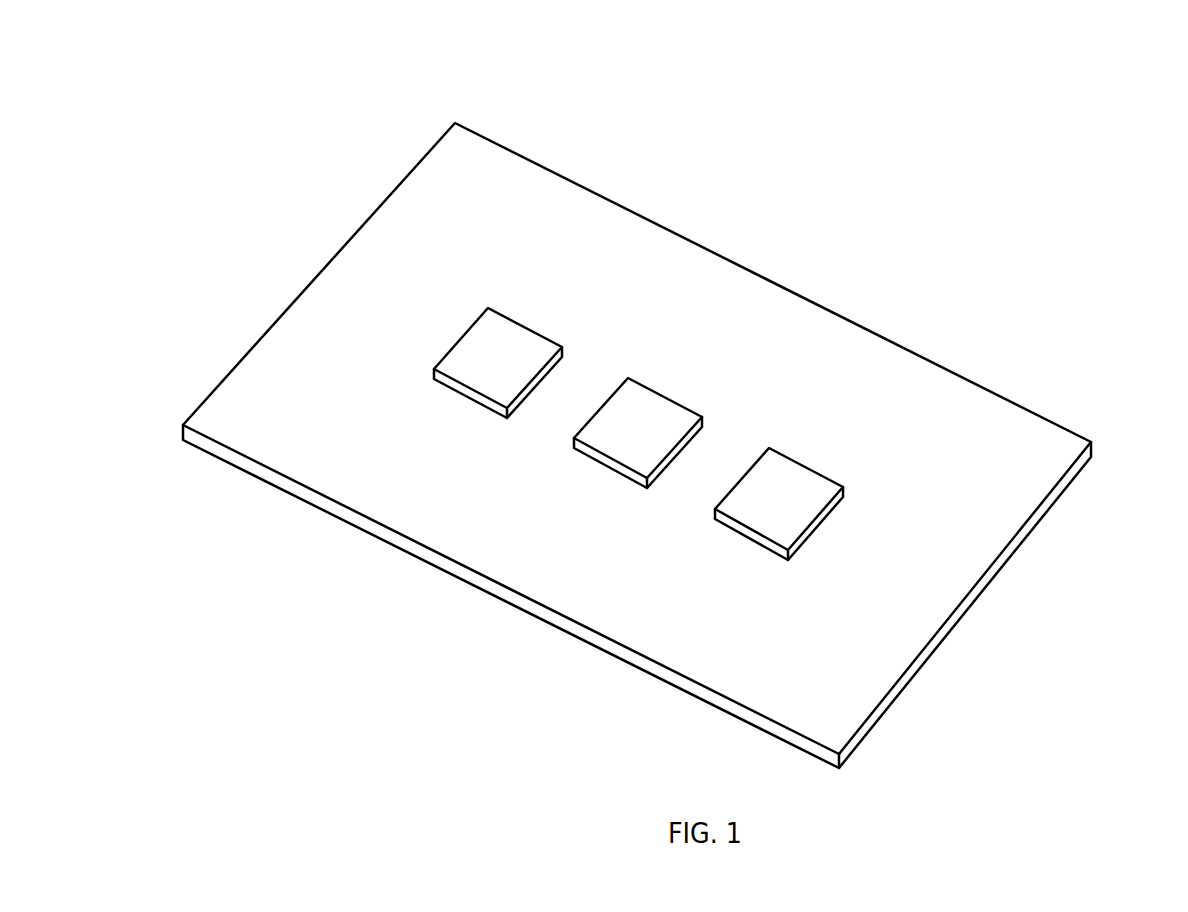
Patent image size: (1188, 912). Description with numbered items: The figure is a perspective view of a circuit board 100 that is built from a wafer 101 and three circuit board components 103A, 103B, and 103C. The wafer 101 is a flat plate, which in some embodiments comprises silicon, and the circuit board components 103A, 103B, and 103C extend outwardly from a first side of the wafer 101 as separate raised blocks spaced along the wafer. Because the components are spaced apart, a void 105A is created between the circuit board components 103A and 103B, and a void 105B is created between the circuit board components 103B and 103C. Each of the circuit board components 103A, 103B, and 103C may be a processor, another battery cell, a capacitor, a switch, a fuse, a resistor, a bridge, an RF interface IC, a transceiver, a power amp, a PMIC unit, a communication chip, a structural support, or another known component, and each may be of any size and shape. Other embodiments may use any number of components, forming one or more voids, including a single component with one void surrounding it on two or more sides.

The circuit board 100 is at (1062, 120).
The wafer 101 is at (528, 157).
The circuit board component 103A is at (498, 365).
The circuit board component 103B is at (638, 434).
The circuit board component 103C is at (772, 508).
The void 105A is at (598, 370).
The void 105B is at (727, 444).